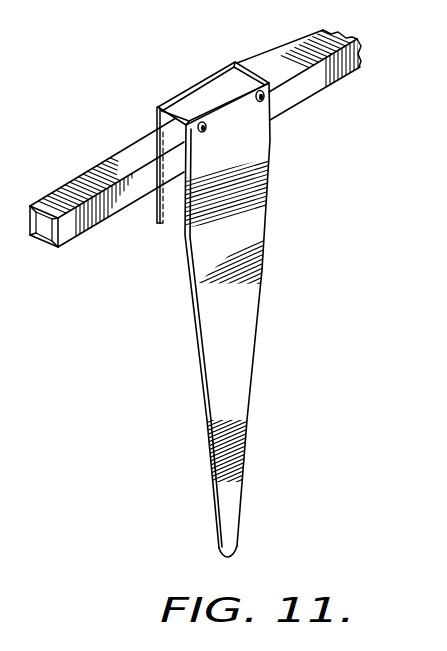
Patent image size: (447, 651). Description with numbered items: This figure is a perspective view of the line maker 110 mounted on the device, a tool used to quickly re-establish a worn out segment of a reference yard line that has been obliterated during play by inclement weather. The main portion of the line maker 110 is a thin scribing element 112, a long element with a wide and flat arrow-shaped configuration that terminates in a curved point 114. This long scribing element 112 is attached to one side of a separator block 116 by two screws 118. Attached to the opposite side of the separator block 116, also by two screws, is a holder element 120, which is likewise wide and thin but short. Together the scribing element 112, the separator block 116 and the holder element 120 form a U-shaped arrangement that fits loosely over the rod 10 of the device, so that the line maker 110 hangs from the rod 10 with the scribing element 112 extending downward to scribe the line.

The rod 10 is at (97, 180).
The line maker 110 is at (212, 298).
The scribing element 112 is at (262, 234).
The curved point 114 is at (229, 553).
The separator block 116 is at (232, 76).
The screws 118 is at (258, 101).
The holder element 120 is at (157, 223).